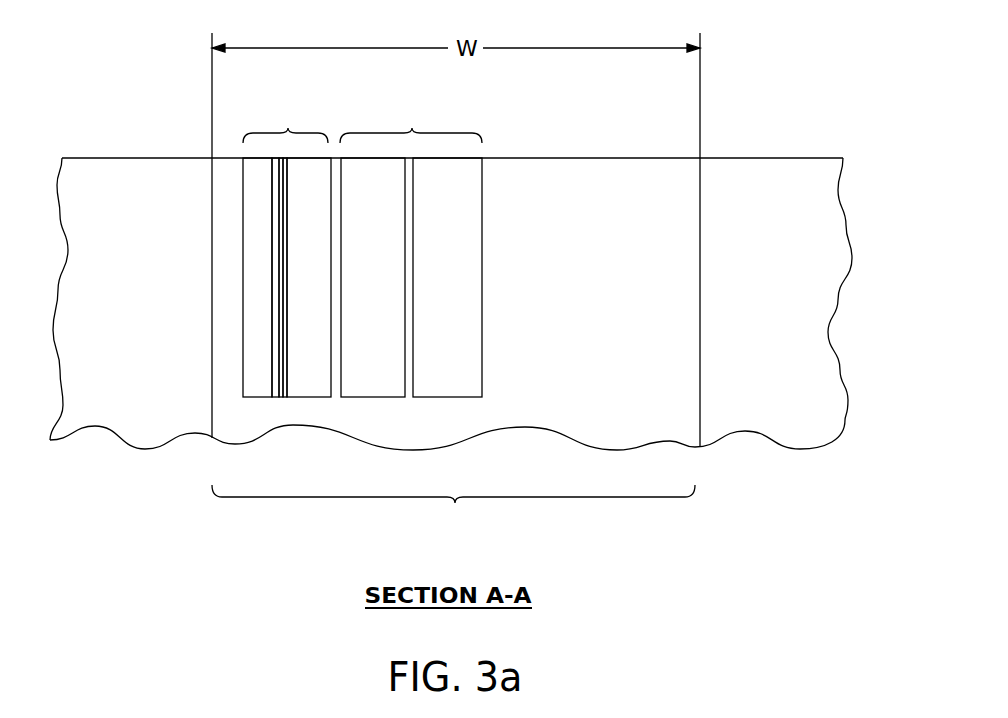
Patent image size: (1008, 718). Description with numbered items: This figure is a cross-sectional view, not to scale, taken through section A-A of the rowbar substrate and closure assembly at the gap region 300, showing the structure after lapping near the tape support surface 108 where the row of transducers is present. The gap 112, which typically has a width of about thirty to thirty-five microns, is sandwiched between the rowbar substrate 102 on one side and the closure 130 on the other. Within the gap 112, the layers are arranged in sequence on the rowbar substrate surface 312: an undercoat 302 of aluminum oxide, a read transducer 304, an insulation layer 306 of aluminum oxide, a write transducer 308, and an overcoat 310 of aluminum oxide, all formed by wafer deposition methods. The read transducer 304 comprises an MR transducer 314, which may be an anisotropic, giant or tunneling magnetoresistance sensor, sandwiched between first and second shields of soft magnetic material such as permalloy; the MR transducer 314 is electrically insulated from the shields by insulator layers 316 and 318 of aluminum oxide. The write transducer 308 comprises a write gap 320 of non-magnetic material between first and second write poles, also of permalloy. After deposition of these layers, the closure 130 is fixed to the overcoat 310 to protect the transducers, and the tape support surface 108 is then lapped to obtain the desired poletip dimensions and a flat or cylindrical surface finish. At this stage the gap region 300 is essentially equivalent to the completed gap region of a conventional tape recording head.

The rowbar substrate 102 is at (92, 265).
The tape support surface 108 is at (143, 157).
The gap 112 is at (455, 503).
The closure 130 is at (832, 267).
The gap region 300 is at (690, 546).
The undercoat 302 is at (222, 157).
The read transducer 304 is at (288, 127).
The insulation layer 306 is at (338, 157).
The write transducer 308 is at (412, 127).
The overcoat 310 is at (586, 175).
The rowbar substrate surface 312 is at (213, 417).
The MR transducer 314 is at (281, 397).
The insulator layer 316 is at (275, 397).
The insulator layer 318 is at (285, 397).
The write gap 320 is at (408, 396).